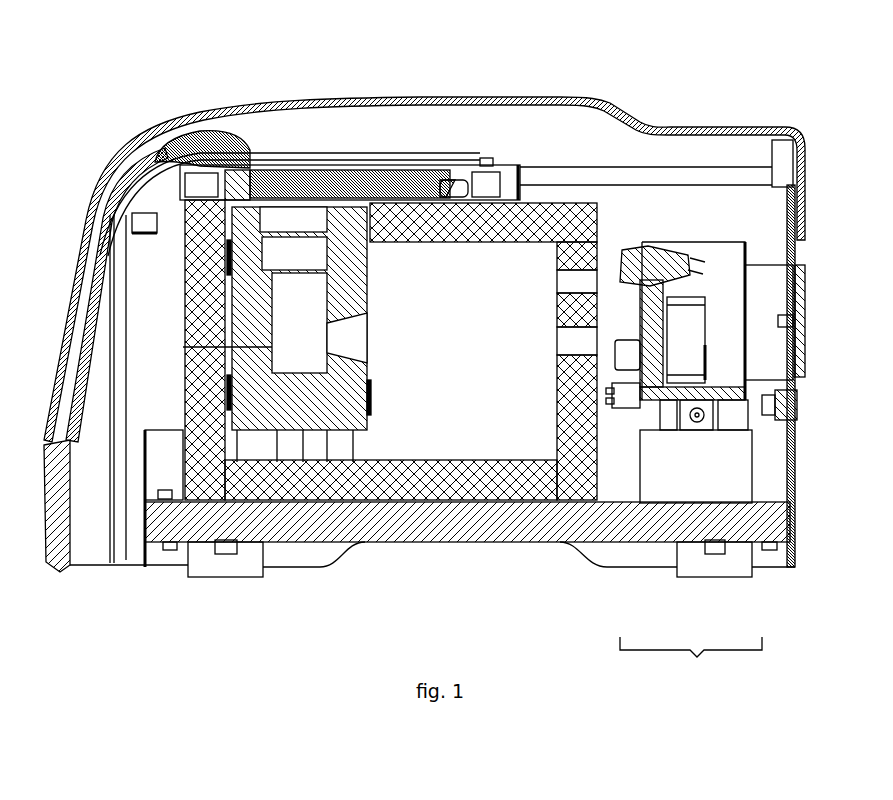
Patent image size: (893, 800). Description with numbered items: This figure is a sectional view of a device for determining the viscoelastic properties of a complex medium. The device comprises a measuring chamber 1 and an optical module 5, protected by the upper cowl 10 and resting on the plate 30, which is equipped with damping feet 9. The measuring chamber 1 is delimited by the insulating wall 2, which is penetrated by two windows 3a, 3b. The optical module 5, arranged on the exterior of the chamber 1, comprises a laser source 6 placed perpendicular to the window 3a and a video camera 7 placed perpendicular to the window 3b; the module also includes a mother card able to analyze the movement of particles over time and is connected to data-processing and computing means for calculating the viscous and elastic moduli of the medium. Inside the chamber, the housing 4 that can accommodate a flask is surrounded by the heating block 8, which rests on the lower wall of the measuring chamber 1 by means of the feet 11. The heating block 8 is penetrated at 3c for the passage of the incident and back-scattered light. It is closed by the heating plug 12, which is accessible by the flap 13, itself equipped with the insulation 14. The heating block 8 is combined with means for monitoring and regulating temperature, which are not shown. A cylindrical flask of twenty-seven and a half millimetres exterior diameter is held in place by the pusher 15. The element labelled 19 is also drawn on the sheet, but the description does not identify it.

The measuring chamber 1 is at (433, 420).
The insulating wall 2 is at (497, 487).
The window 3a is at (568, 288).
The window 3b is at (577, 348).
The passage in heating block 3c is at (347, 340).
The housing 4 is at (300, 512).
The optical module 5 is at (684, 469).
The laser source 6 is at (668, 290).
The video camera 7 is at (710, 333).
The heating block 8 is at (143, 540).
The damping feet 9 is at (197, 565).
The upper cowl 10 is at (235, 118).
The feet 11 is at (340, 455).
The heating plug 12 is at (293, 158).
The flap 13 is at (365, 177).
The insulation 14 is at (412, 173).
The pusher 15 is at (183, 347).
The inner shell 19 is at (182, 235).
The plate 30 is at (552, 520).